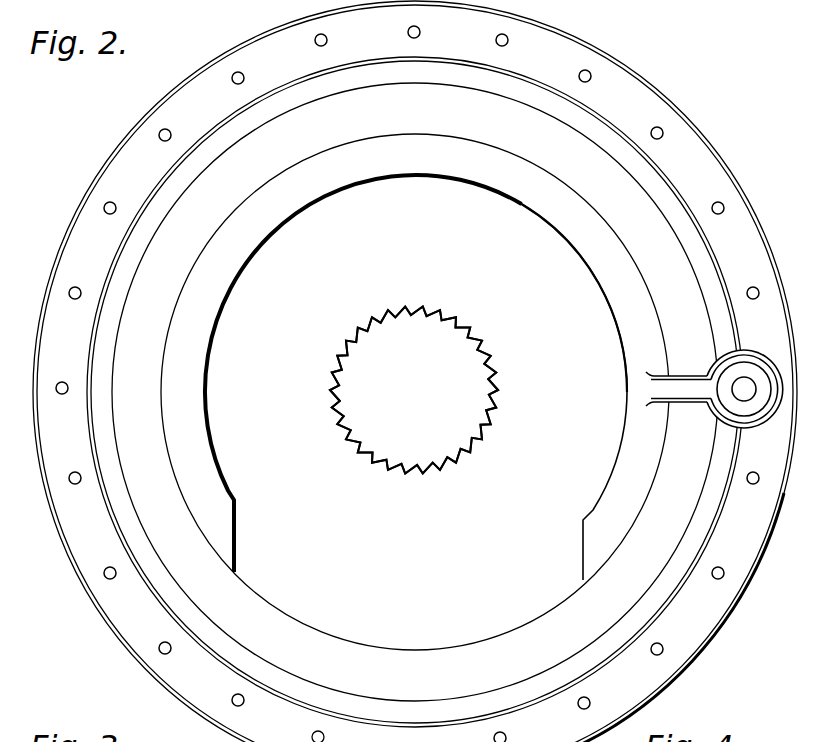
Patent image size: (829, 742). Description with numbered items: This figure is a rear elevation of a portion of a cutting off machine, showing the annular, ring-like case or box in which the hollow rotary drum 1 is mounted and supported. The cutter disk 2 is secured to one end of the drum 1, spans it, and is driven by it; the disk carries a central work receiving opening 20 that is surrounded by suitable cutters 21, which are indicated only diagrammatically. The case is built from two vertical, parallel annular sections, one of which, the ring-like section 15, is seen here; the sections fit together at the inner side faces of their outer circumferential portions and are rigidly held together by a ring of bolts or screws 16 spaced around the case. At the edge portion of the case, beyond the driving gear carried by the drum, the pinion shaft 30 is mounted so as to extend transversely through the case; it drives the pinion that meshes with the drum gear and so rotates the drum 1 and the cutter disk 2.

The hollow rotary drum 1 is at (421, 646).
The cutter disk 2 is at (220, 351).
The annular case section 15 is at (668, 548).
The bolts or screws 16 is at (325, 737).
The central work receiving opening 20 is at (414, 390).
The cutters 21 is at (353, 447).
The pinion shaft 30 is at (740, 388).